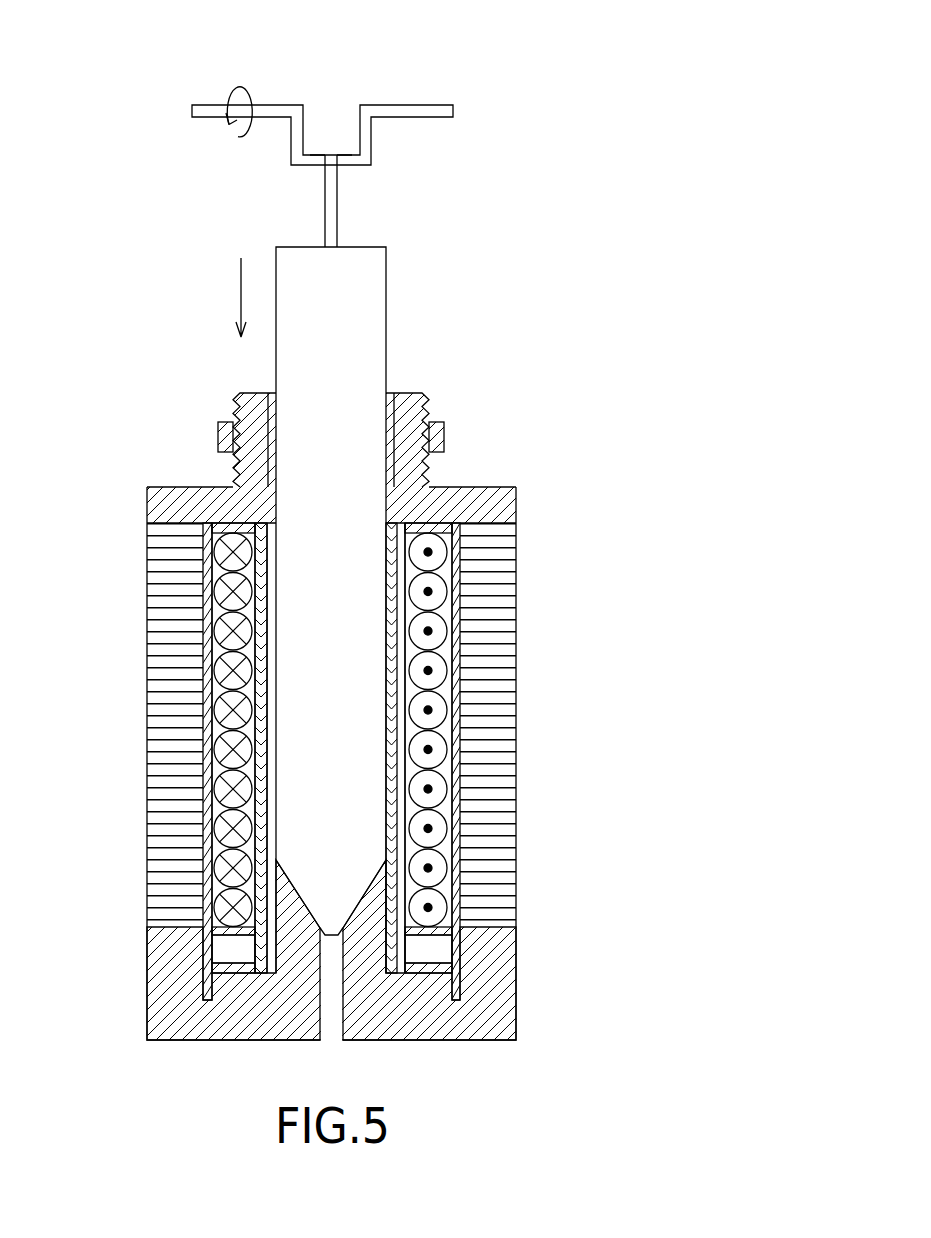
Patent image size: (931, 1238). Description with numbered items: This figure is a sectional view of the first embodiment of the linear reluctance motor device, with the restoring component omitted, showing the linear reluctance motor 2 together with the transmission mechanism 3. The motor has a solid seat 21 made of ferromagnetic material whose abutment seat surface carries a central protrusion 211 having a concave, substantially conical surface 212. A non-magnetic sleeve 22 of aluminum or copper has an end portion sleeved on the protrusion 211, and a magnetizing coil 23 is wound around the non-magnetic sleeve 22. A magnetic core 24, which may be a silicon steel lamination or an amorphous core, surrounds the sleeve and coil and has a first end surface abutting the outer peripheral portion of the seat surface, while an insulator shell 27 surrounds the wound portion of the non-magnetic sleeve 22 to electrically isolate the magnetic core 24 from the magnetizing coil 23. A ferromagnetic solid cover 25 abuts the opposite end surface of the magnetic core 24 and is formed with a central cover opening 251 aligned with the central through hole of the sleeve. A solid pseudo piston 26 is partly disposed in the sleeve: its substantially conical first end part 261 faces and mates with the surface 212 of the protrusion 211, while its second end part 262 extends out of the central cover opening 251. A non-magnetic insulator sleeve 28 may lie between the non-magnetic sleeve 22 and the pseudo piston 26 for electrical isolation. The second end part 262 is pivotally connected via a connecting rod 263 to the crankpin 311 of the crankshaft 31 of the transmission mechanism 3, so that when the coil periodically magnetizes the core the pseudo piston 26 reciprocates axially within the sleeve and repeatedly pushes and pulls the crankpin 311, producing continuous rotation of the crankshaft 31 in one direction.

The linear reluctance motor 2 is at (511, 463).
The transmission mechanism 3 is at (462, 80).
The crankshaft 31 is at (216, 105).
The crankpin 311 is at (315, 152).
The solid seat 21 is at (507, 1008).
The protrusion 211 is at (368, 950).
The concave substantially conical surface 212 is at (367, 893).
The non-magnetic sleeve 22 is at (400, 745).
The magnetizing coil 23 is at (442, 708).
The magnetic core 24 is at (484, 640).
The solid cover 25 is at (508, 503).
The central cover opening 251 is at (398, 418).
The solid pseudo piston 26 is at (373, 365).
The first end part 261 is at (338, 875).
The second end part 262 is at (367, 261).
The connecting rod 263 is at (339, 178).
The insulator shell 27 is at (457, 590).
The non-magnetic insulator sleeve 28 is at (268, 768).